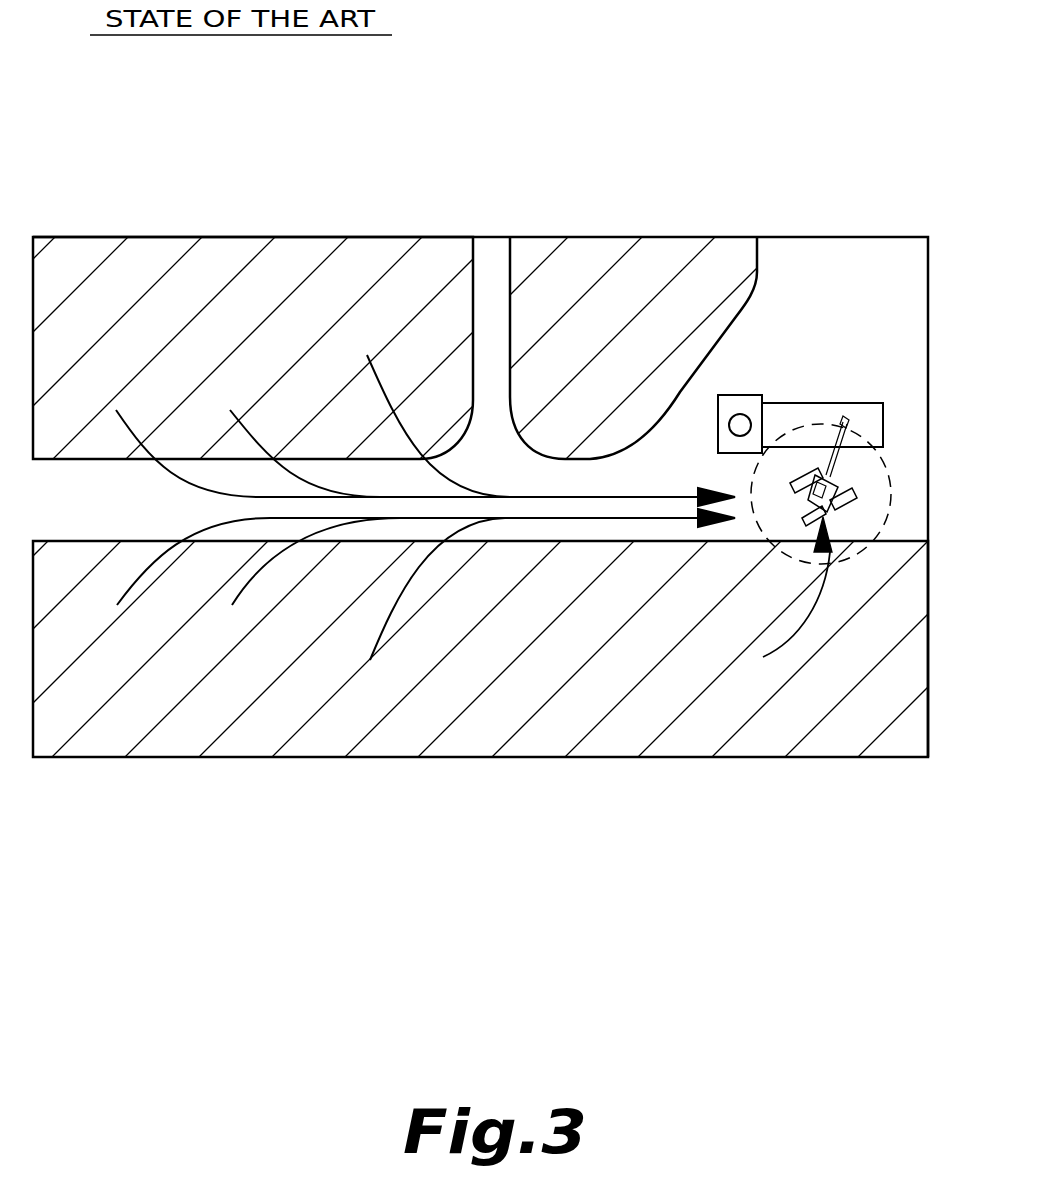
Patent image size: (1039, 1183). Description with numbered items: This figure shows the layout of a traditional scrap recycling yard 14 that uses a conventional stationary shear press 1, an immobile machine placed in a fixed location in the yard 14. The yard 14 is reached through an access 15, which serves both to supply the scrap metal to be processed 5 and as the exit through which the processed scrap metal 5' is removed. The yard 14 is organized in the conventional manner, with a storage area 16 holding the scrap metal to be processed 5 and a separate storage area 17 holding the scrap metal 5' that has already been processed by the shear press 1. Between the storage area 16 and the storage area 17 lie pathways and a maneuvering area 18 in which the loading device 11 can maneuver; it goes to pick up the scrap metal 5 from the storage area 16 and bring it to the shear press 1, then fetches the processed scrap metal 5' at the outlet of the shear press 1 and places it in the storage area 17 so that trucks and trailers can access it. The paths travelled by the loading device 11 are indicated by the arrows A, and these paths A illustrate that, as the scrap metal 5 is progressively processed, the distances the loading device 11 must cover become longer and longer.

The shear press 1 is at (813, 413).
The scrap metal to be processed 5 is at (504, 499).
The processed scrap metal 5' is at (633, 307).
The loading device 11 is at (847, 492).
The yard 14 is at (838, 737).
The access 15 is at (59, 502).
The storage area for scrap metal to be processed 16 is at (337, 278).
The storage area for processed scrap metal 17 is at (723, 262).
The pathways and maneuvering area 18 is at (893, 303).
The arrows indicating paths of the loading device A is at (543, 518).